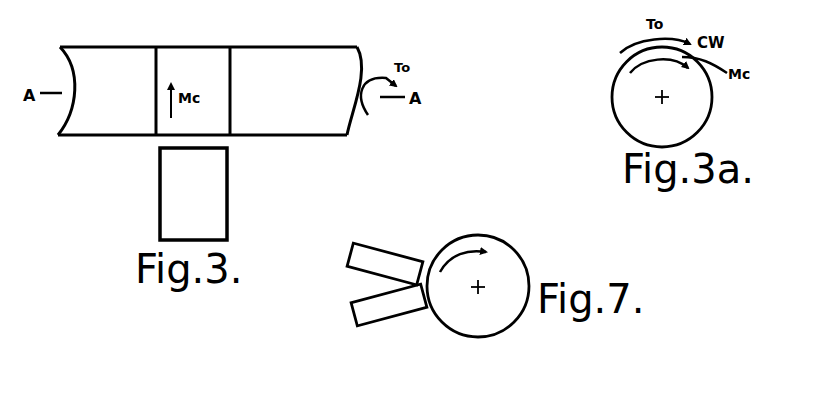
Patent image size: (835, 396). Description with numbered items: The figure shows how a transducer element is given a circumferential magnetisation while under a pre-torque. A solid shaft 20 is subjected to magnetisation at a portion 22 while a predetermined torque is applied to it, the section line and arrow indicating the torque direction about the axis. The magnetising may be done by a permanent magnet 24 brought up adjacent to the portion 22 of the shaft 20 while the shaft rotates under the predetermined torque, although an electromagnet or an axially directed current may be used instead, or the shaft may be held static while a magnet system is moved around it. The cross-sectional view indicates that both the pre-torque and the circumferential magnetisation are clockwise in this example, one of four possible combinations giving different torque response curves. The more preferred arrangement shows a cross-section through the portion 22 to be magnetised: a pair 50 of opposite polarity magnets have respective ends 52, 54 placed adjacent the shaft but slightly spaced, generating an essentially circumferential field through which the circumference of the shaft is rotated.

In FIG. 3, the solid shaft 20 is at (305, 64).
In FIG. 3, the portion 22 is at (205, 58).
In FIG. 3A, the portion 22 is at (700, 112).
In FIG. 7, the portion 22 is at (517, 272).
In FIG. 3, the permanent magnet 24 is at (160, 194).
In FIG. 7, the pair of opposite polarity magnets 50 is at (381, 285).
In FIG. 7, the magnet end 52 is at (418, 257).
In FIG. 7, the magnet end 54 is at (418, 312).